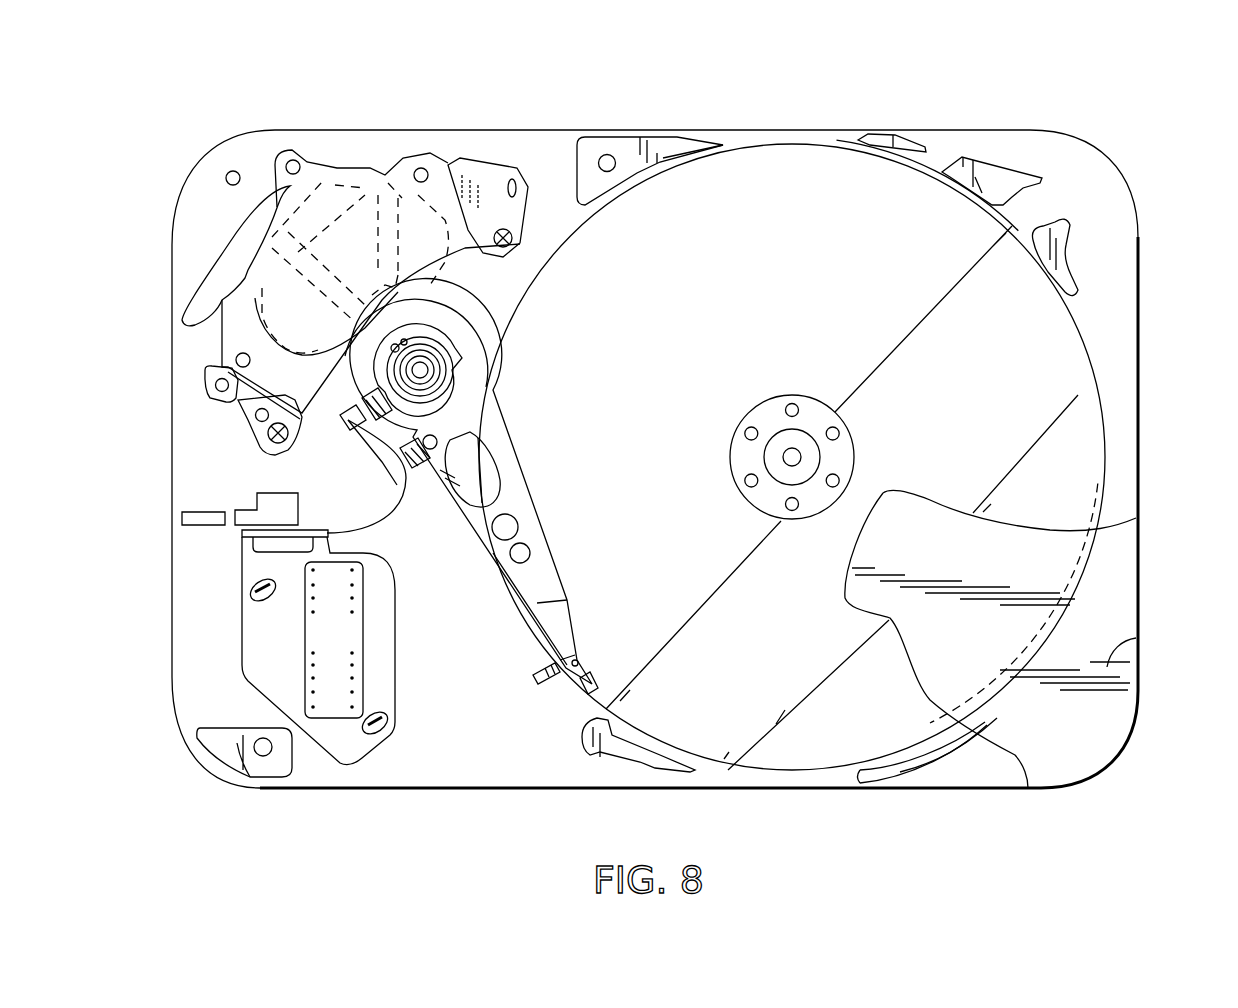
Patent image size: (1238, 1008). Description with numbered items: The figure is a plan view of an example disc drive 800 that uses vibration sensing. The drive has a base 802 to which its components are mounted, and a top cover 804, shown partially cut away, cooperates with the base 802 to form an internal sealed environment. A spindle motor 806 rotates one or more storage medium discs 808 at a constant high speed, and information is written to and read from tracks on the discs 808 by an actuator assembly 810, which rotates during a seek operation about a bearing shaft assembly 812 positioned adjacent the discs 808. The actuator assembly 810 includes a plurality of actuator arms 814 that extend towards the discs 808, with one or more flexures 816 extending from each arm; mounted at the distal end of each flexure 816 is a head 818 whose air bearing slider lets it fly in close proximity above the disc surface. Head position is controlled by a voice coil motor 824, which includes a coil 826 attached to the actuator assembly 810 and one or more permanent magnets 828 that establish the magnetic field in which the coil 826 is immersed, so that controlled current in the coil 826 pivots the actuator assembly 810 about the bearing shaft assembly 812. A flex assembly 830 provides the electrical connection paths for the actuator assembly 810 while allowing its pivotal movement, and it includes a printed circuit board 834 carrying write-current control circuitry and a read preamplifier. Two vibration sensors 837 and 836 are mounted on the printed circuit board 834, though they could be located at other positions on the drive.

The disc drive 800 is at (649, 458).
The base 802 is at (548, 147).
The top cover 804 is at (1107, 667).
The spindle motor 806 is at (793, 456).
The storage medium disc 808 is at (768, 200).
The actuator assembly 810 is at (512, 472).
The bearing shaft assembly 812 is at (425, 371).
The actuator arm 814 is at (530, 516).
The flexure 816 is at (572, 640).
The head 818 is at (596, 670).
The voice coil motor 824 is at (385, 158).
The coil 826 is at (303, 140).
The permanent magnet 828 is at (476, 145).
The flex assembly 830 is at (393, 522).
The printed circuit board 834 is at (257, 612).
The vibration sensor 836 is at (375, 738).
The vibration sensor 837 is at (252, 581).